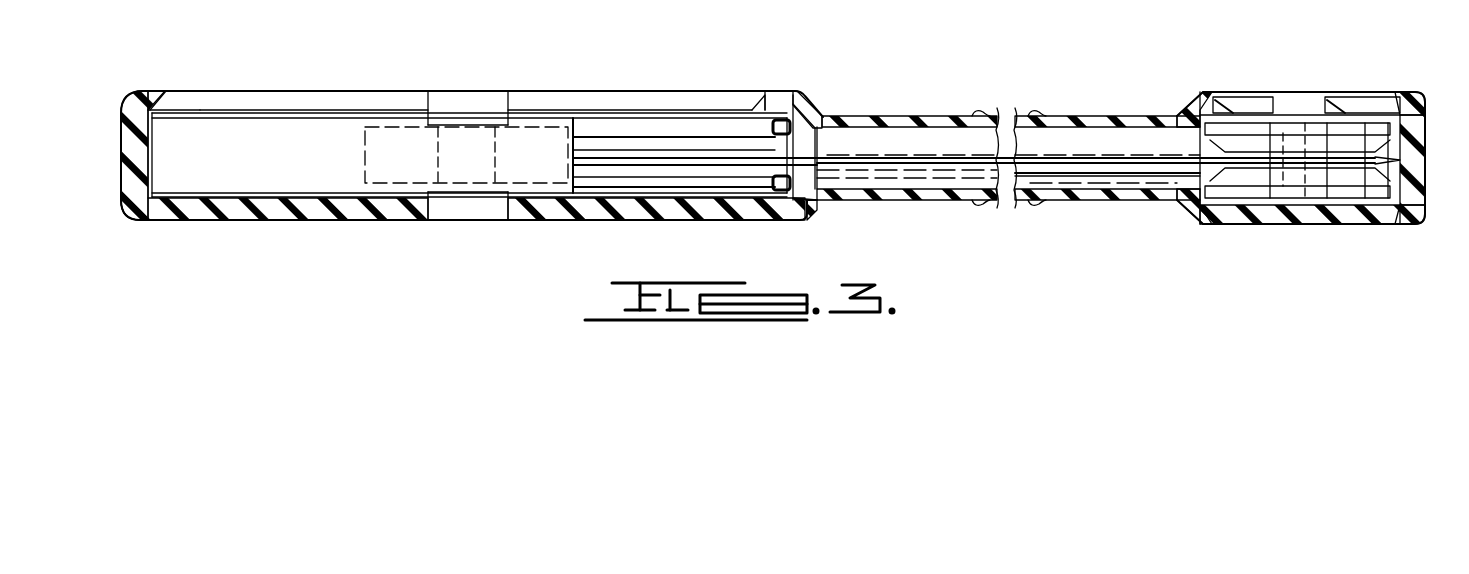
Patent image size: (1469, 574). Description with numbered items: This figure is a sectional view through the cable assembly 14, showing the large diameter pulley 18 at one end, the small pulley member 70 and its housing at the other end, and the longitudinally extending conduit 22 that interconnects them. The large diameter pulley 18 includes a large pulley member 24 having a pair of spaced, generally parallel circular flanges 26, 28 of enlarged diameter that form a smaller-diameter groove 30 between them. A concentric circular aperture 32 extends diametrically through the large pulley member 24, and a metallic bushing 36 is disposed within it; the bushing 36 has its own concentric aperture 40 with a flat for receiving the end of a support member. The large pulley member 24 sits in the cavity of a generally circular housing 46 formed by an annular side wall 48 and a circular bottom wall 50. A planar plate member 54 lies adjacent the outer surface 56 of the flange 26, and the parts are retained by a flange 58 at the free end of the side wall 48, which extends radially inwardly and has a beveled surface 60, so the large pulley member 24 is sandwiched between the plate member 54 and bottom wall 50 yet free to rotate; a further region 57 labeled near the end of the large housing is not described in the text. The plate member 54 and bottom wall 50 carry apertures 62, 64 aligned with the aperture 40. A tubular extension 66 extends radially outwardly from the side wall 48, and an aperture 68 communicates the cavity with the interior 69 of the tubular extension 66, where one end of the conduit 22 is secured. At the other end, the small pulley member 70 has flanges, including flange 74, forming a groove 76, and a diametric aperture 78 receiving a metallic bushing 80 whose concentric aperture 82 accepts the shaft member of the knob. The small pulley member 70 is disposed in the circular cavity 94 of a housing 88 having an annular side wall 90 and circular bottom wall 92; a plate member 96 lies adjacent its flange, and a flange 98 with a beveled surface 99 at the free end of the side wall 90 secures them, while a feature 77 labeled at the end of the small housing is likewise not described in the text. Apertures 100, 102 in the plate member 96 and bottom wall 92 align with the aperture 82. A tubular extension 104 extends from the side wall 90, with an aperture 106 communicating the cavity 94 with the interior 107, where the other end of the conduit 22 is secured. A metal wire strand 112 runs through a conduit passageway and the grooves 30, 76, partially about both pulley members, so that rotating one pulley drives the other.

The cable assembly 14 is at (974, 55).
The large diameter pulley 18 is at (150, 91).
The conduit 22 is at (990, 193).
The large pulley member 24 is at (137, 220).
The flange 26 is at (780, 126).
The flange 28 is at (775, 190).
The groove 30 is at (701, 165).
The aperture 32 is at (563, 117).
The bushing 36 is at (385, 128).
The aperture 40 is at (440, 150).
The housing 46 is at (815, 100).
The side wall 48 is at (124, 112).
The bottom wall 50 is at (288, 212).
The plate member 54 is at (230, 110).
The outer surface 56 is at (305, 114).
The end wall chamber 57 is at (788, 97).
The flange 58 is at (145, 92).
The beveled surface 60 is at (165, 100).
The aperture 62 is at (506, 98).
The aperture 64 is at (508, 212).
The tubular extension 66 is at (890, 117).
The aperture 68 is at (817, 181).
The interior 69 is at (923, 185).
The small pulley member 70 is at (1198, 215).
The flange 74 is at (1378, 210).
The groove 76 is at (1353, 208).
The end cap 77 is at (1408, 100).
The aperture 78 is at (1275, 205).
The bushing 80 is at (1305, 210).
The aperture 82 is at (1282, 130).
The housing 88 is at (1180, 100).
The side wall 90 is at (1412, 220).
The bottom wall 92 is at (1220, 213).
The cavity 94 is at (1400, 160).
The plate member 96 is at (1243, 104).
The flange 98 is at (1402, 86).
The beveled surface 99 is at (1397, 107).
The aperture 100 is at (1320, 110).
The aperture 102 is at (1326, 200).
The tubular extension 104 is at (1090, 120).
The aperture 106 is at (1190, 186).
The interior 107 is at (1085, 186).
The strand 112 is at (825, 157).